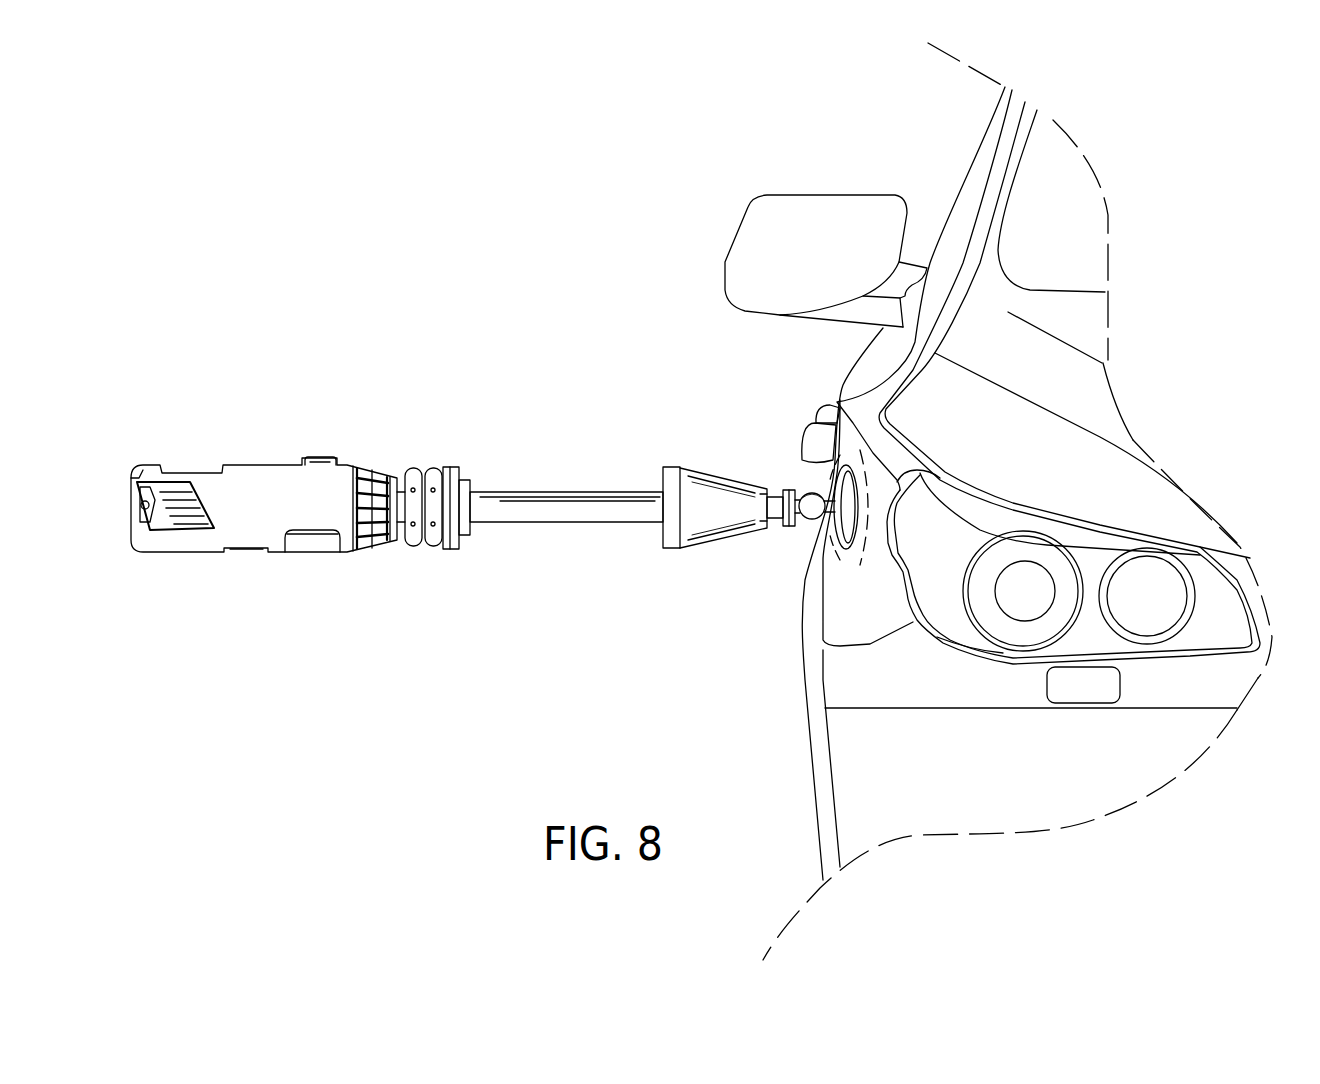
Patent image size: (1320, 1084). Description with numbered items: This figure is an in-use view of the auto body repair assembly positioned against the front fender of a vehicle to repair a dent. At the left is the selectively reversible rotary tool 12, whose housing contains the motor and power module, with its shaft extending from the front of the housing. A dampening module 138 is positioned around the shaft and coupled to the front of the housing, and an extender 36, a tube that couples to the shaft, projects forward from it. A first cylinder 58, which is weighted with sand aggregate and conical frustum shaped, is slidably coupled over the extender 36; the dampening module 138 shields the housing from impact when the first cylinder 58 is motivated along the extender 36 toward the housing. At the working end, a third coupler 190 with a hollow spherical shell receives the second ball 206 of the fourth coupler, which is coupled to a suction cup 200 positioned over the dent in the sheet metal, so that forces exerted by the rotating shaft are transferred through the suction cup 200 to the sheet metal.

The rotary tool 12 is at (255, 462).
The dampening module 138 is at (425, 466).
The extender 36 is at (553, 492).
The first cylinder 58 is at (706, 468).
The third coupler 190 is at (797, 492).
The second ball 206 is at (806, 523).
The suction cup 200 is at (845, 532).